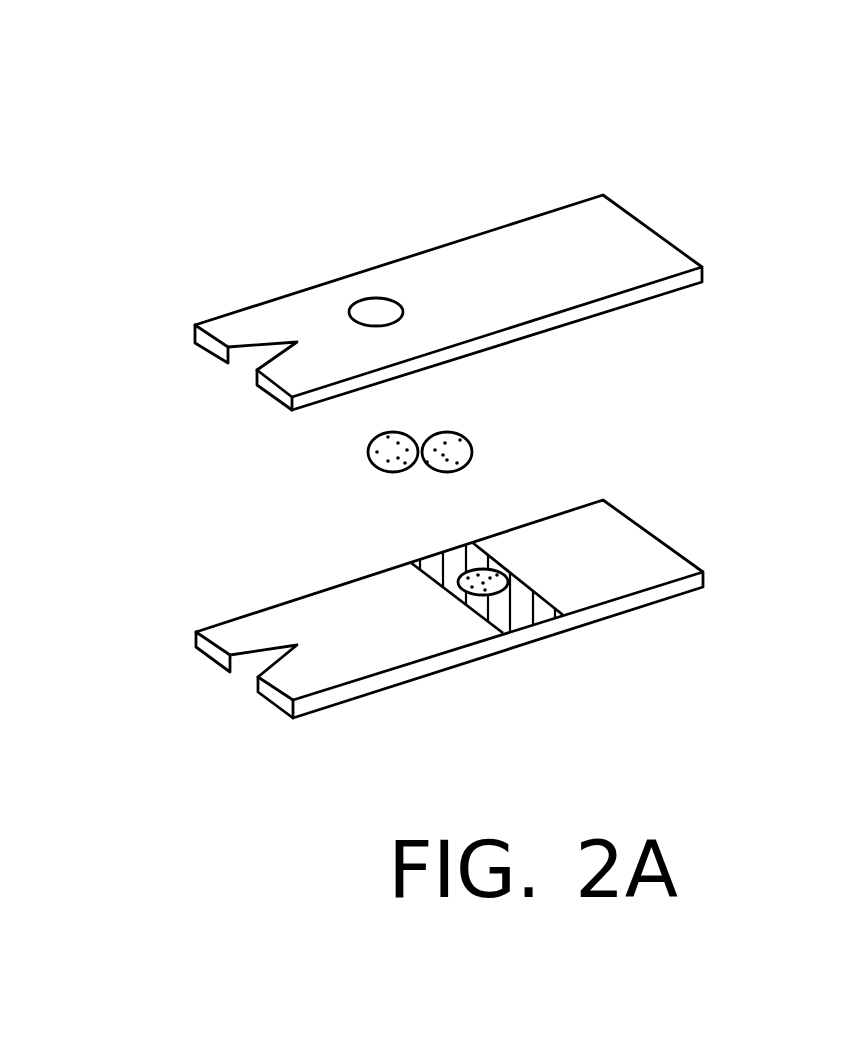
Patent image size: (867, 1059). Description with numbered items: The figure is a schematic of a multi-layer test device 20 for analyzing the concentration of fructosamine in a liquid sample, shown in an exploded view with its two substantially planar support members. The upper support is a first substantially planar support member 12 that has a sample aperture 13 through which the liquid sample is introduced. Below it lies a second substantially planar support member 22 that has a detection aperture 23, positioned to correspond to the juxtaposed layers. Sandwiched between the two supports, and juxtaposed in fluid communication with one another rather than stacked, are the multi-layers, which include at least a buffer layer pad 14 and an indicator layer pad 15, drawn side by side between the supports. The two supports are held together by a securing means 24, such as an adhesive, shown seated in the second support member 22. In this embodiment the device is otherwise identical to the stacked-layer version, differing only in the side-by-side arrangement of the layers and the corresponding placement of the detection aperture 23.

The multi-layer test device 20 is at (463, 73).
The first substantially planar support member 12 is at (508, 258).
The sample aperture 13 is at (367, 312).
The buffer layer pad 14 is at (397, 452).
The indicator layer pad 15 is at (458, 458).
The second substantially planar support member 22 is at (633, 570).
The detection aperture 23 is at (410, 562).
The securing means 24 is at (498, 600).